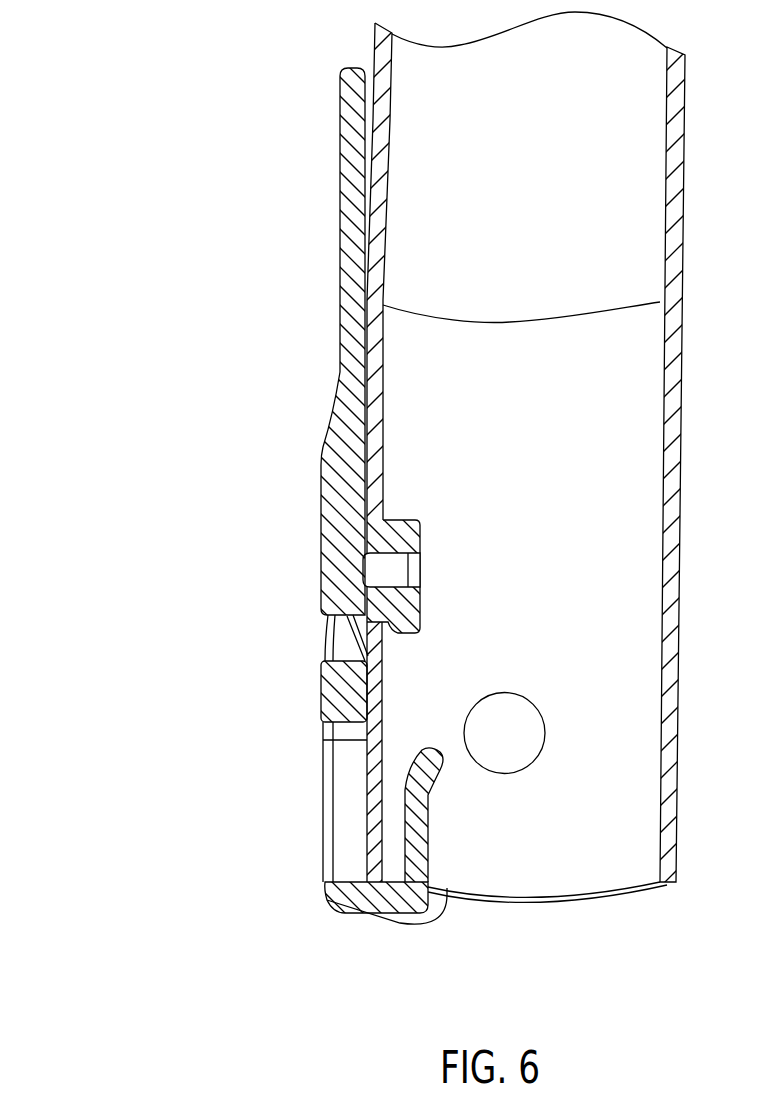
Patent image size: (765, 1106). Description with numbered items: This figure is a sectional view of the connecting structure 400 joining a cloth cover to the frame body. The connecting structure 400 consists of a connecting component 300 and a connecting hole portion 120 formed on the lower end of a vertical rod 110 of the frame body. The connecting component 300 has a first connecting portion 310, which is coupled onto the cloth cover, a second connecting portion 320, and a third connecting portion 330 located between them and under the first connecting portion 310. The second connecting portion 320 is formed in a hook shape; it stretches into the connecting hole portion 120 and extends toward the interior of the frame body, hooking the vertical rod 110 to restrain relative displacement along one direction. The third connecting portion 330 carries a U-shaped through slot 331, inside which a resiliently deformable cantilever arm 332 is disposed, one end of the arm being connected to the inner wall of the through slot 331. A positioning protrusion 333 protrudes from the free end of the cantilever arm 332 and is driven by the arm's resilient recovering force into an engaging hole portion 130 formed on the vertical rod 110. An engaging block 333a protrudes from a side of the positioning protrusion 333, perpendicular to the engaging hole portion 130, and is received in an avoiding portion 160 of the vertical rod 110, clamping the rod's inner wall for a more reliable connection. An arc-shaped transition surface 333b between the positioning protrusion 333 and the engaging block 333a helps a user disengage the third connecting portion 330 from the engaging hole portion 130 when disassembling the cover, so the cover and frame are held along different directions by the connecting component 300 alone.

The vertical rod 110 is at (378, 225).
The connecting hole portion 120 is at (475, 905).
The engaging hole portion 130 is at (367, 515).
The avoiding portion 160 is at (398, 648).
The connecting component 300 is at (283, 525).
The first connecting portion 310 is at (358, 310).
The second connecting portion 320 is at (415, 825).
The third connecting portion 330 is at (256, 605).
The through slot 331 is at (273, 554).
The cantilever arm 332 is at (330, 545).
The positioning protrusion 333 is at (291, 565).
The engaging block 333a is at (382, 622).
The arc-shaped transition surface 333b is at (345, 613).
The connecting structure 400 is at (347, 525).